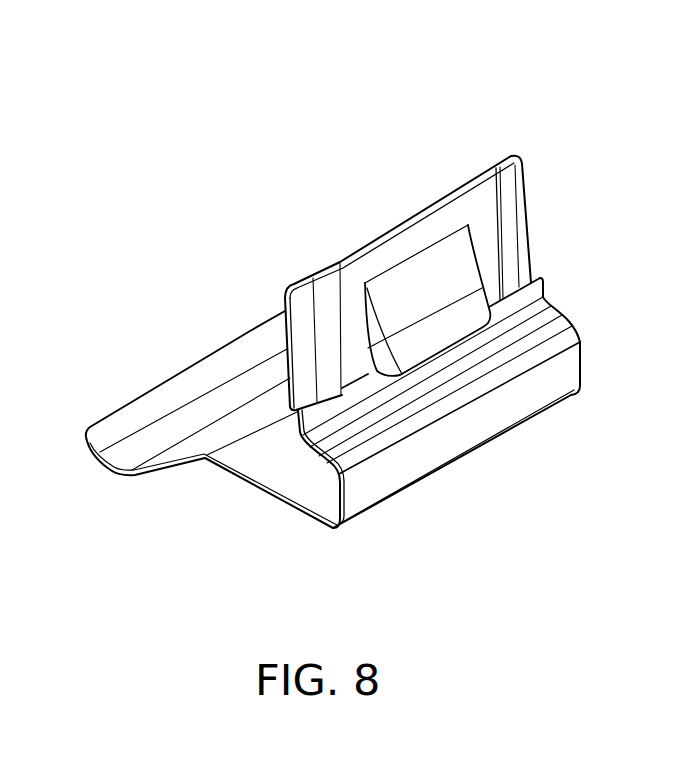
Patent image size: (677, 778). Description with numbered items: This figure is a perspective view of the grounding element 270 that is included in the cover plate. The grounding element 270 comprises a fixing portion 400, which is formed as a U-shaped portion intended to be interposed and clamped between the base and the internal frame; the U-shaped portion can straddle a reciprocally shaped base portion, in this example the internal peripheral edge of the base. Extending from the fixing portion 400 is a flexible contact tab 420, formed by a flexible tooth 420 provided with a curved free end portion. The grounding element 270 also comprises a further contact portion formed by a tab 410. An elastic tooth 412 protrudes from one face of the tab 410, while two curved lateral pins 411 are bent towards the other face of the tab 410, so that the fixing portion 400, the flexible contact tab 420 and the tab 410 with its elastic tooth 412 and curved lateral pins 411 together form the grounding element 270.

The grounding element 270 is at (306, 152).
The fixing portion 400 is at (452, 435).
The tab 410 is at (408, 237).
The curved lateral pins 411 is at (300, 307).
The elastic tooth 412 is at (452, 320).
The flexible contact tab 420 is at (124, 480).